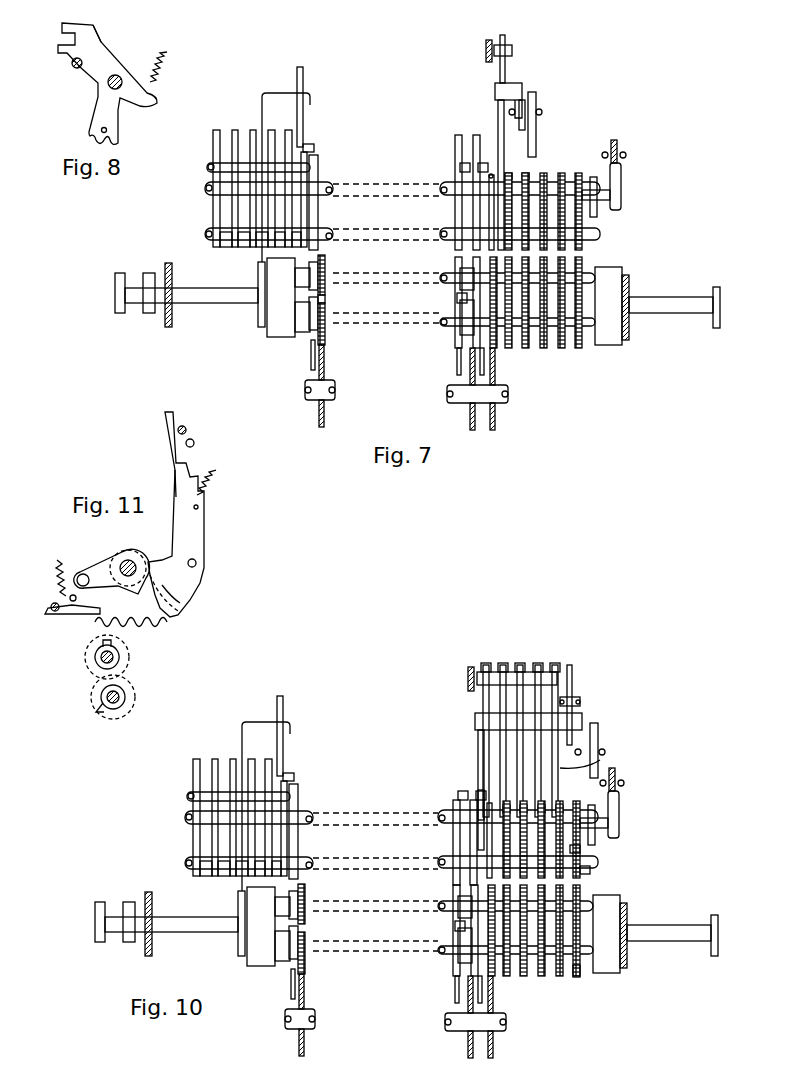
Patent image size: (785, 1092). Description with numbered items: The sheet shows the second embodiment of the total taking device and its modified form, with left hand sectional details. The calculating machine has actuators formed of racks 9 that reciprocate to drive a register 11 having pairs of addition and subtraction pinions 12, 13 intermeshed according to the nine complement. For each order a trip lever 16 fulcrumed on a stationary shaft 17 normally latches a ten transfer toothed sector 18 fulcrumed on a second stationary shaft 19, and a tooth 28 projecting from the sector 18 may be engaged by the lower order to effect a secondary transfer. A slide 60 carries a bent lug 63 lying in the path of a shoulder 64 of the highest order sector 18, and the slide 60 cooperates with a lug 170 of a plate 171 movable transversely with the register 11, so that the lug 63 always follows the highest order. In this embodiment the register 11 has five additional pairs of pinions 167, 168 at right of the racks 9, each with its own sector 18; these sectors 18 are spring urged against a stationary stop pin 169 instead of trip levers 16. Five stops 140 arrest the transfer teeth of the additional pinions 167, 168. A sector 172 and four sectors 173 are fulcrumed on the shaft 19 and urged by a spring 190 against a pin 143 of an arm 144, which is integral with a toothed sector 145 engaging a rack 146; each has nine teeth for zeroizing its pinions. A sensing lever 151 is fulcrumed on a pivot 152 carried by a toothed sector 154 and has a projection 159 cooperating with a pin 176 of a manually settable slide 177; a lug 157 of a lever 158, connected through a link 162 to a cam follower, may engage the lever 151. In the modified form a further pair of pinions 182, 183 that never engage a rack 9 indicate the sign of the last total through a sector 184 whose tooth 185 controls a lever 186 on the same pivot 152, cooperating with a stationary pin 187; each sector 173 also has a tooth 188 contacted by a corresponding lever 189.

In FIG. 7, the rack 9 is at (325, 408).
In FIG. 10, the rack 9 is at (305, 1038).
In FIG. 7, the register 11 is at (627, 365).
In FIG. 10, the register 11 is at (627, 983).
In FIG. 7, the addition pinion 12 is at (325, 337).
In FIG. 10, the addition pinion 12 is at (305, 966).
In FIG. 7, the subtraction pinion 13 is at (325, 262).
In FIG. 10, the subtraction pinion 13 is at (305, 926).
In FIG. 7, the trip lever 16 is at (325, 297).
In FIG. 7, the stationary shaft 17 is at (333, 233).
In FIG. 11, the stationary shaft 17 is at (52, 606).
In FIG. 8, the toothed sector 18 is at (104, 52).
In FIG. 7, the toothed sector 18 is at (213, 223).
In FIG. 10, the toothed sector 18 is at (193, 840).
In FIG. 8, the second stationary shaft 19 is at (121, 77).
In FIG. 7, the second stationary shaft 19 is at (325, 185).
In FIG. 11, the second stationary shaft 19 is at (133, 565).
In FIG. 10, the second stationary shaft 19 is at (305, 814).
In FIG. 8, the tooth 28 is at (108, 130).
In FIG. 7, the tooth 28 is at (223, 249).
In FIG. 10, the tooth 28 is at (203, 878).
In FIG. 7, the slide 60 is at (303, 76).
In FIG. 10, the slide 60 is at (283, 705).
In FIG. 7, the bent lug 63 is at (313, 145).
In FIG. 10, the bent lug 63 is at (293, 774).
In FIG. 8, the shoulder 64 is at (95, 36).
In FIG. 7, the stationary stop 140 is at (575, 238).
In FIG. 11, the stationary stop 140 is at (95, 622).
In FIG. 10, the stationary stop 140 is at (450, 870).
In FIG. 7, the pin 143 is at (600, 200).
In FIG. 11, the pin 143 is at (80, 575).
In FIG. 10, the pin 143 is at (610, 826).
In FIG. 7, the arm 144 is at (593, 177).
In FIG. 11, the arm 144 is at (100, 563).
In FIG. 10, the arm 144 is at (596, 840).
In FIG. 7, the toothed sector 145 is at (621, 176).
In FIG. 10, the toothed sector 145 is at (619, 806).
In FIG. 7, the rack 146 is at (617, 142).
In FIG. 10, the rack 146 is at (615, 773).
In FIG. 7, the sensing lever 151 is at (500, 112).
In FIG. 10, the sensing lever 151 is at (481, 745).
In FIG. 11, the pivot 152 is at (196, 563).
In FIG. 10, the pivot 152 is at (478, 800).
In FIG. 7, the toothed sector 154 is at (491, 178).
In FIG. 10, the toothed sector 154 is at (489, 830).
In FIG. 7, the lug 157 is at (495, 90).
In FIG. 10, the lug 157 is at (578, 716).
In FIG. 7, the lever 158 is at (523, 110).
In FIG. 7, the projection 159 is at (506, 63).
In FIG. 7, the link 162 is at (536, 118).
In FIG. 10, the link 162 is at (597, 729).
In FIG. 7, the additional pinion 167 is at (570, 348).
In FIG. 11, the additional pinion 167 is at (110, 720).
In FIG. 10, the additional pinion 167 is at (565, 976).
In FIG. 7, the additional pinion 168 is at (462, 273).
In FIG. 11, the additional pinion 168 is at (85, 658).
In FIG. 10, the additional pinion 168 is at (458, 902).
In FIG. 8, the stationary stop pin 169 is at (77, 68).
In FIG. 7, the stationary stop pin 169 is at (210, 165).
In FIG. 10, the stationary stop pin 169 is at (190, 794).
In FIG. 7, the lug 170 is at (285, 93).
In FIG. 10, the lug 170 is at (265, 722).
In FIG. 7, the plate 171 is at (262, 268).
In FIG. 10, the plate 171 is at (242, 897).
In FIG. 7, the sector 172 is at (512, 178).
In FIG. 10, the sector 172 is at (490, 805).
In FIG. 7, the sector 173 is at (562, 178).
In FIG. 11, the sector 173 is at (126, 636).
In FIG. 10, the sector 173 is at (560, 804).
In FIG. 7, the pin 176 is at (512, 49).
In FIG. 11, the pin 176 is at (186, 428).
In FIG. 10, the pin 176 is at (490, 676).
In FIG. 7, the slide 177 is at (486, 52).
In FIG. 10, the slide 177 is at (468, 678).
In FIG. 10, the pinion 182 is at (576, 978).
In FIG. 10, the pinion 183 is at (627, 919).
In FIG. 10, the sector 184 is at (578, 851).
In FIG. 10, the tooth 185 is at (588, 871).
In FIG. 11, the lever 186 is at (175, 497).
In FIG. 10, the lever 186 is at (585, 765).
In FIG. 11, the stationary pin 187 is at (194, 444).
In FIG. 10, the stationary pin 187 is at (575, 698).
In FIG. 11, the tooth 188 is at (170, 612).
In FIG. 11, the lever 189 is at (203, 525).
In FIG. 10, the lever 189 is at (552, 668).
In FIG. 11, the spring 190 is at (57, 560).